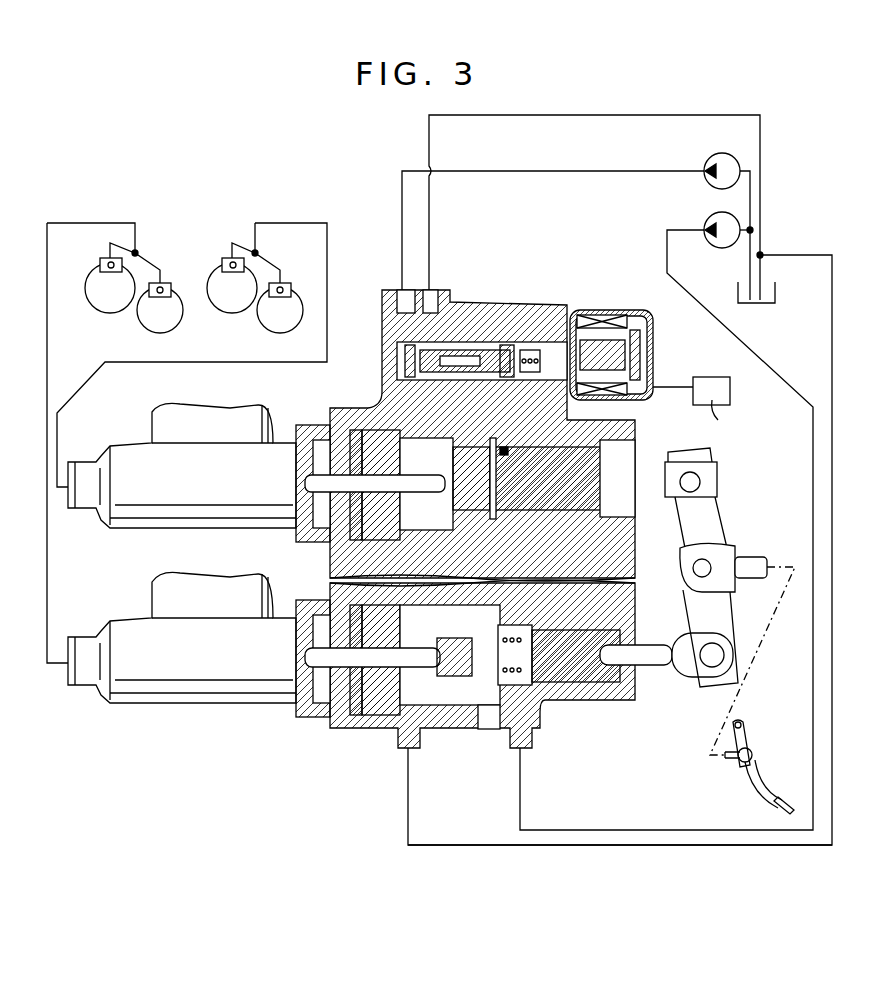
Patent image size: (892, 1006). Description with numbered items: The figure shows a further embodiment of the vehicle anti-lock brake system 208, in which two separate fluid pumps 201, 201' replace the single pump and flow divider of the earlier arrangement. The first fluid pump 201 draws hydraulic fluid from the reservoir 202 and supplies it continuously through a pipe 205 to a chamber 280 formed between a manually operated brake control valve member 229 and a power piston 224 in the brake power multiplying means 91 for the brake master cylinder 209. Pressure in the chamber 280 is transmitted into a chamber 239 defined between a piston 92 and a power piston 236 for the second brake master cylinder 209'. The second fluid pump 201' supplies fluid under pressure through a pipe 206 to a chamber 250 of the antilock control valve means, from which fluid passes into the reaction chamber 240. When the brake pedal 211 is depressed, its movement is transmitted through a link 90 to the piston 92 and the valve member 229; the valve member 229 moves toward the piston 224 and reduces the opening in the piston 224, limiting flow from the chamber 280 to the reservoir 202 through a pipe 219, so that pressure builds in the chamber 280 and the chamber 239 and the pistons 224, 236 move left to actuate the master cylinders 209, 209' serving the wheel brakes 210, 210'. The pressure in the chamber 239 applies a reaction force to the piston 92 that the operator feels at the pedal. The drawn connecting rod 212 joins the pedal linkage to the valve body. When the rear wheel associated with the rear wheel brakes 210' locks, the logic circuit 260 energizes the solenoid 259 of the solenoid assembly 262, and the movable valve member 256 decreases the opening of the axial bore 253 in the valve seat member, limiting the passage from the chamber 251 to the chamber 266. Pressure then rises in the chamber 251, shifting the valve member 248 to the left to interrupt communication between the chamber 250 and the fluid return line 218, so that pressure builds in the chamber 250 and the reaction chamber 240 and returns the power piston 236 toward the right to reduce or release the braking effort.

The link 90 is at (712, 532).
The brake power multiplying means 91 is at (352, 738).
The piston 92 is at (637, 458).
The first fluid pump 201 is at (703, 221).
The second fluid pump 201' is at (703, 162).
The reservoir 202 is at (775, 293).
The pipe 205 is at (670, 230).
The pipe 206 is at (505, 171).
The vehicle anti-lock brake system 208 is at (370, 403).
The brake master cylinder 209 is at (182, 637).
The brake master cylinder 209' is at (182, 465).
The wheel brakes 210 is at (115, 443).
The rear wheel brakes 210' is at (192, 355).
The brake pedal 211 is at (755, 782).
The push rod link 212 is at (655, 665).
The fluid return line 218 is at (552, 104).
The pipe 219 is at (483, 847).
The power piston 224 is at (437, 668).
The brake control valve member 229 is at (562, 685).
The power piston 236 is at (377, 501).
The chamber 239 is at (500, 437).
The reaction chamber 240 is at (426, 484).
The valve member 248 is at (430, 338).
The chamber 250 is at (440, 348).
The chamber 251 is at (470, 350).
The axial bore 253 is at (508, 332).
The movable valve member 256 is at (590, 315).
The solenoid 259 is at (628, 318).
The logic circuit 260 is at (730, 383).
The solenoid assembly 262 is at (653, 357).
The chamber 266 is at (533, 332).
The chamber 280 is at (486, 730).